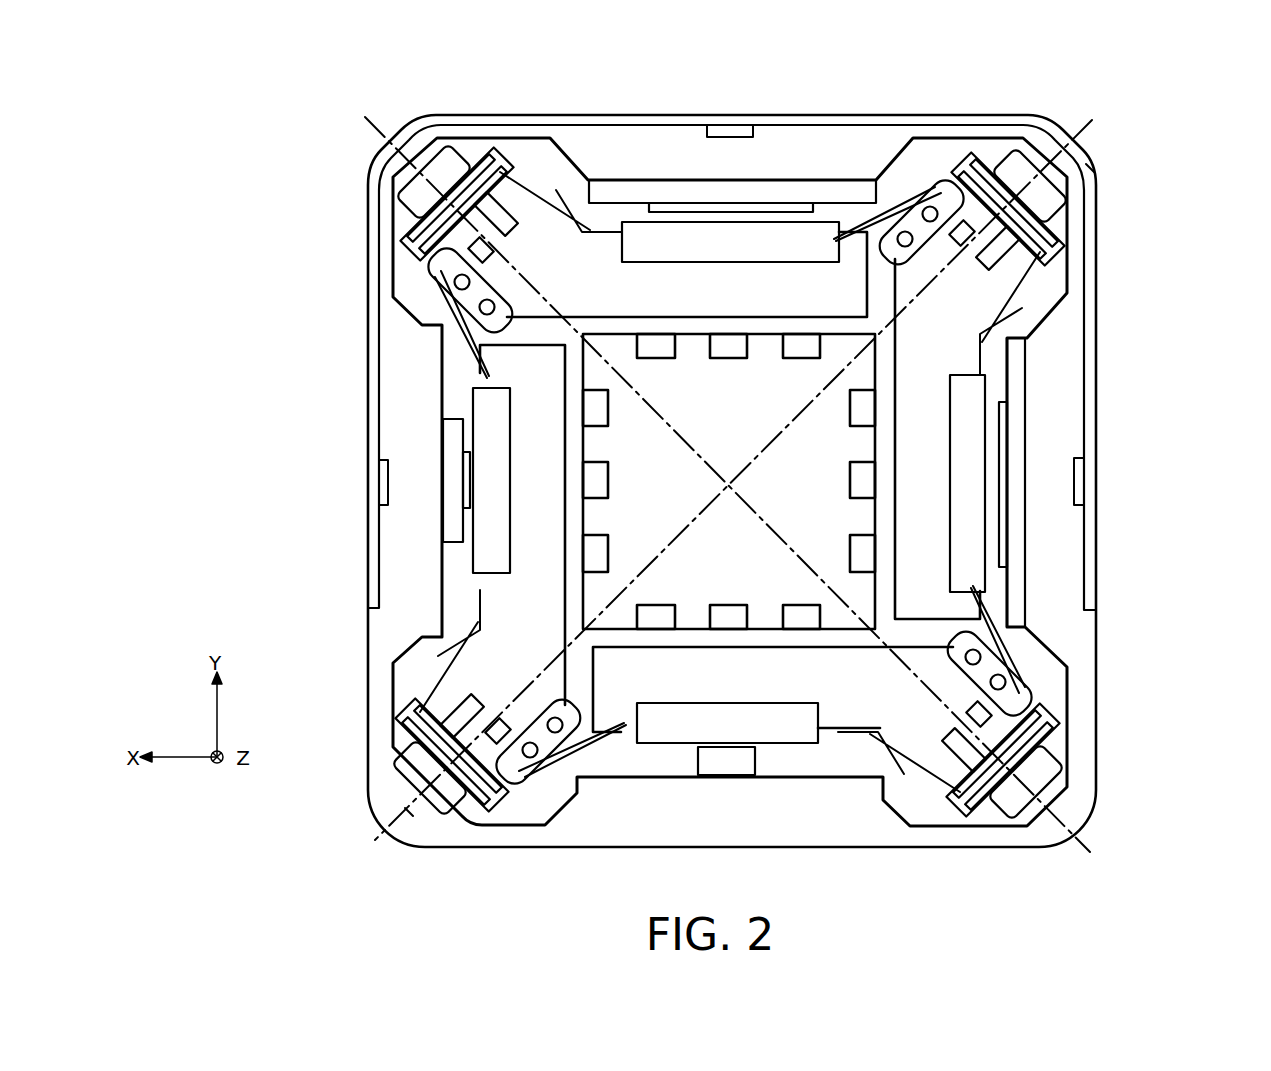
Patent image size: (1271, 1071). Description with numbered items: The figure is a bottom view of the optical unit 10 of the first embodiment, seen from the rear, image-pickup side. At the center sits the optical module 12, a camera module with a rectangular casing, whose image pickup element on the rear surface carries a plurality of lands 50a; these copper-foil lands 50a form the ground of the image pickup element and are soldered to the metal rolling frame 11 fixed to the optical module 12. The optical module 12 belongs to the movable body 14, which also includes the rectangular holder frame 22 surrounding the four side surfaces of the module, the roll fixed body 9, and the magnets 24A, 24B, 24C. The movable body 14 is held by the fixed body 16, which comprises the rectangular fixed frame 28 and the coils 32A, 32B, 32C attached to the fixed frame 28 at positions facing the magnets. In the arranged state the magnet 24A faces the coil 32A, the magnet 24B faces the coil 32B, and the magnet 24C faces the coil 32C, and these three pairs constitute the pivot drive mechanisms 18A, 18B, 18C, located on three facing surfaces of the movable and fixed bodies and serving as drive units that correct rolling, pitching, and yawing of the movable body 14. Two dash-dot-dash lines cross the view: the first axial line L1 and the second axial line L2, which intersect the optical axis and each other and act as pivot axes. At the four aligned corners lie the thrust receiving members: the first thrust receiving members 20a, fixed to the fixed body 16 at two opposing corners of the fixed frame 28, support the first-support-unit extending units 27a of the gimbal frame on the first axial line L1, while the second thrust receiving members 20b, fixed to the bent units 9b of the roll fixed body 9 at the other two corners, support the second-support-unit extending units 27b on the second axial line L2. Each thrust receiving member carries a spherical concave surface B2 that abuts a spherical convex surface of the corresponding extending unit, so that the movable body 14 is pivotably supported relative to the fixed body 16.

The optical unit 10 is at (1190, 136).
The fixed frame 28 is at (1087, 262).
The fixed body 16 is at (1104, 352).
The holder frame 22 is at (505, 655).
The roll fixed body 9 is at (462, 608).
The first thrust receiving member 20a is at (1030, 150).
The second thrust receiving member 20b is at (425, 195).
The first-support-unit extending unit 27a is at (1030, 232).
The second-support-unit extending unit 27b is at (486, 212).
The bent unit 9b is at (468, 158).
The optical module 12 is at (578, 343).
The land 50a is at (597, 405).
The first axial line L1 is at (747, 470).
The second axial line L2 is at (712, 469).
The spherical concave surface B2 is at (1092, 167).
The pivot drive mechanism 18A is at (887, 297).
The pivot drive mechanism 18B is at (1091, 482).
The pivot drive mechanism 18C is at (353, 489).
The coil 32A is at (649, 190).
The coil 32B is at (1012, 423).
The coil 32C is at (455, 525).
The magnet 24A is at (711, 240).
The magnet 24B is at (968, 487).
The magnet 24C is at (485, 440).
The movable body 14 is at (1006, 378).
The rolling frame 11 is at (676, 640).